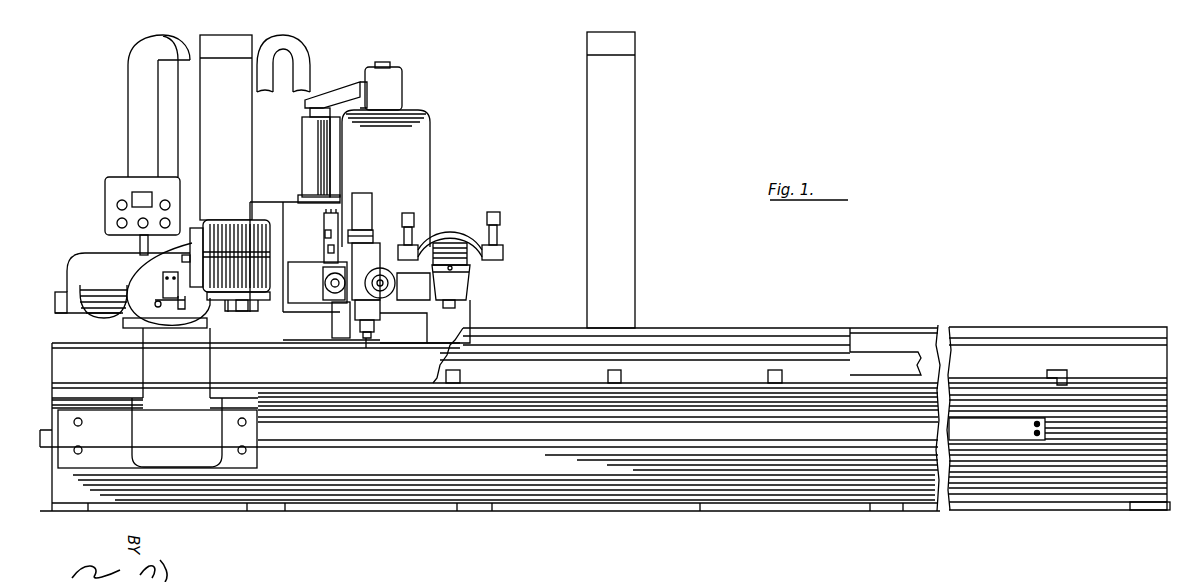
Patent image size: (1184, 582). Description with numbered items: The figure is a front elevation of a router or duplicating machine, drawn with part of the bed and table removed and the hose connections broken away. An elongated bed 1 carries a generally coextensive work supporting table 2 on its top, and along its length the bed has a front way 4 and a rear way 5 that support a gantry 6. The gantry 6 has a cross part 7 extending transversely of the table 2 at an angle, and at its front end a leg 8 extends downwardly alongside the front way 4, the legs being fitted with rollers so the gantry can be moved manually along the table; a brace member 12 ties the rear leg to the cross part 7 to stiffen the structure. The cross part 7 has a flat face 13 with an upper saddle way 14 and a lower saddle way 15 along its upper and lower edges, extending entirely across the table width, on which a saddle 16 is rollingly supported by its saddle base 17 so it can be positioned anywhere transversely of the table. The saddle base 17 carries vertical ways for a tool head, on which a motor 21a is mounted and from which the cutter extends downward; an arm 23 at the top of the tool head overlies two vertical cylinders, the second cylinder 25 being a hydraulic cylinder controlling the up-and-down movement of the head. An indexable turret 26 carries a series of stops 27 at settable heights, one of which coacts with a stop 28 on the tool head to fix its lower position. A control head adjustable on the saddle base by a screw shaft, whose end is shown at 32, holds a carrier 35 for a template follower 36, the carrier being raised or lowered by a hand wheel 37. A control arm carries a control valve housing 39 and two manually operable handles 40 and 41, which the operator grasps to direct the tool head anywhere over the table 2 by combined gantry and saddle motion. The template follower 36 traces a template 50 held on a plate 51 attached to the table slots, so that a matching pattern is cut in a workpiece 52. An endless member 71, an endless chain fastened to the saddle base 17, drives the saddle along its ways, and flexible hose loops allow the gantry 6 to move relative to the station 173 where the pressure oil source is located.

The bed 1 is at (1030, 480).
The work supporting table 2 is at (1105, 390).
The front way 4 is at (538, 432).
The rear way 5 is at (1021, 327).
The gantry 6 is at (241, 366).
The gantry cross part 7 is at (166, 285).
The leg 8 is at (181, 371).
The brace member 12 is at (85, 265).
The flat face 13 is at (236, 256).
The upper saddle way 14 is at (225, 220).
The lower saddle way 15 is at (215, 300).
The saddle 16 is at (291, 189).
The saddle base 17 is at (305, 227).
The motor 21a is at (415, 158).
The arm 23 is at (347, 95).
The second cylinder 25 is at (312, 143).
The indexable turret 26 is at (324, 228).
The stops 27 is at (324, 262).
The stop 28 is at (347, 200).
The screw shaft end 32 is at (330, 292).
The carrier 35 is at (368, 207).
The template follower 36 is at (367, 340).
The hand wheel 37 is at (380, 302).
The housing 39 is at (457, 285).
The handle 40 is at (418, 235).
The handle 41 is at (498, 232).
The template 50 is at (745, 340).
The plate 51 is at (707, 362).
The workpiece 52 is at (896, 348).
The endless member 71 is at (242, 302).
The station 173 is at (620, 282).